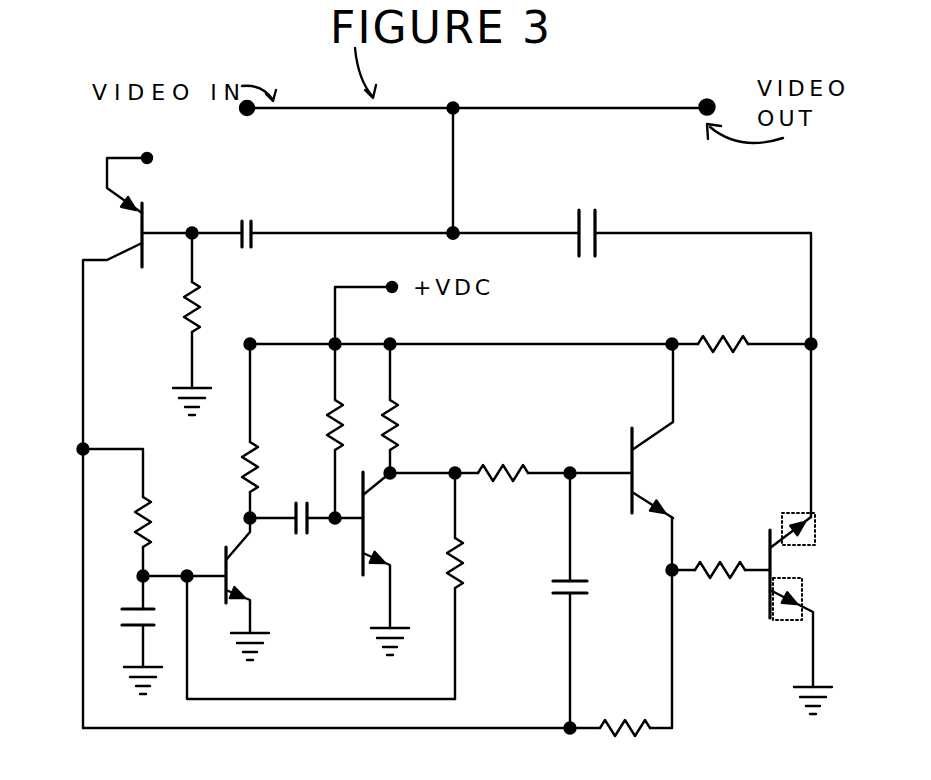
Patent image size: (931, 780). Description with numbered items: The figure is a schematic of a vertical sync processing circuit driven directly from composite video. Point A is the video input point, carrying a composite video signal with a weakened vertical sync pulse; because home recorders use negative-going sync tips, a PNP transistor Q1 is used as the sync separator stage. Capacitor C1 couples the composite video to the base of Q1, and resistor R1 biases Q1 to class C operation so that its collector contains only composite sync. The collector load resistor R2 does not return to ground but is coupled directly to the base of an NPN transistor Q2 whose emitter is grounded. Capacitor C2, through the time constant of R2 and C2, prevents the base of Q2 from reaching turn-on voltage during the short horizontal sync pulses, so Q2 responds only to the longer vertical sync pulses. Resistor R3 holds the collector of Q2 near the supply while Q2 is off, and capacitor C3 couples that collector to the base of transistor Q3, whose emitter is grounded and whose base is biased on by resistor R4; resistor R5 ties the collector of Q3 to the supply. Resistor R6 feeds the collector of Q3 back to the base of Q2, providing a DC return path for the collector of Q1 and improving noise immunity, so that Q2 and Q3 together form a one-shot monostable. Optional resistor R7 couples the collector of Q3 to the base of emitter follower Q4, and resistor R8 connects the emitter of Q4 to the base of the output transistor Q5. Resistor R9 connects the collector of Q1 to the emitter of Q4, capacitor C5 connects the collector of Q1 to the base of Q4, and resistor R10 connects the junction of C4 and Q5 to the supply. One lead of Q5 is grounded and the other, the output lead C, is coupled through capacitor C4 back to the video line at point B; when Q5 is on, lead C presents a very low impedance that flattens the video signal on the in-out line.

The PNP transistor Q1 is at (161, 437).
The NPN transistor Q2 is at (299, 608).
The transistor Q3 is at (386, 563).
The emitter follower stage Q4 is at (655, 429).
The output transistor Q5 is at (801, 615).
The bias resistor R1 is at (184, 324).
The collector load resistor R2 is at (134, 513).
The resistor R3 is at (232, 431).
The resistor R4 is at (316, 431).
The resistor R5 is at (410, 411).
The resistor R6 is at (472, 586).
The resistor R7 is at (511, 458).
The resistor R8 is at (719, 557).
The resistor R9 is at (377, 627).
The resistor R10 is at (744, 329).
The coupling capacitor C1 is at (383, 247).
The capacitor C2 is at (149, 635).
The coupling capacitor C3 is at (306, 536).
The coupling capacitor C4 is at (690, 363).
The capacitor C5 is at (581, 603).
The video input point A is at (316, 126).
The video output point B is at (506, 124).
The output lead C is at (804, 433).